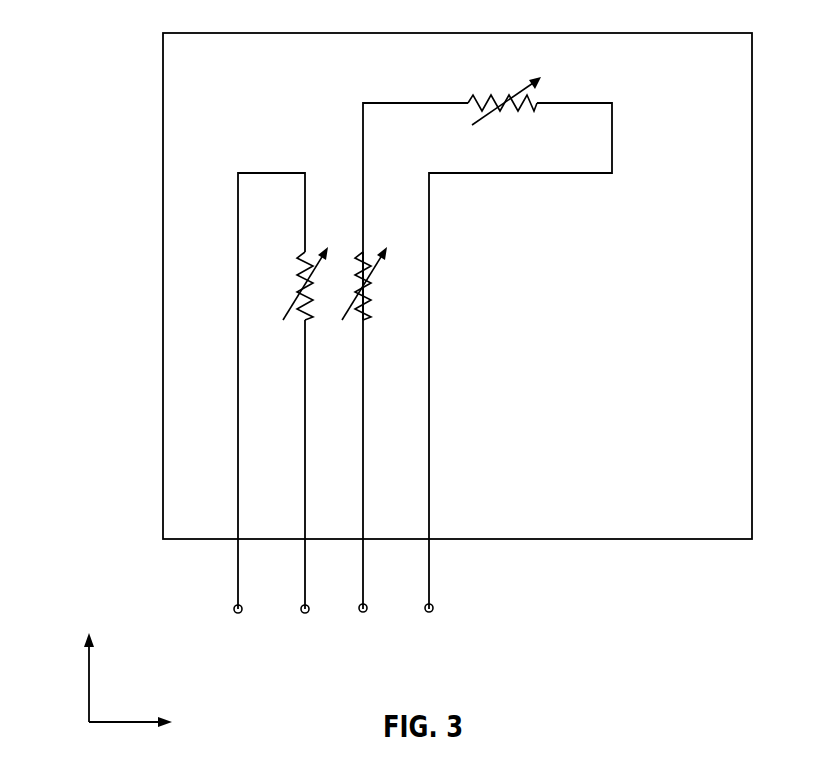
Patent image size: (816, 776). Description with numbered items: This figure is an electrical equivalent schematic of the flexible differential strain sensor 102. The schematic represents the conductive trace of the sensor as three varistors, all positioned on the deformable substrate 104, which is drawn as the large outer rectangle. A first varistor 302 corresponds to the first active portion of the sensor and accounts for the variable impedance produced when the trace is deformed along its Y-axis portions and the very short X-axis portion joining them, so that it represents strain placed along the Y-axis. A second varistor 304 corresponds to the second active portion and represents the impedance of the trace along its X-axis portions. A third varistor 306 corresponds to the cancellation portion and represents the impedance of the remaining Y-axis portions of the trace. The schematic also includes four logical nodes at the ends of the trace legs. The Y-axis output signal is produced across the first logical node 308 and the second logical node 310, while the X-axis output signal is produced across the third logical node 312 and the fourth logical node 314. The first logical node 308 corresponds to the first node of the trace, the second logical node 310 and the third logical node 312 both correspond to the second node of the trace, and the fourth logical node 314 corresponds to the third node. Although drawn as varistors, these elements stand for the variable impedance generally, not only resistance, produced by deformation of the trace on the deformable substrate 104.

The flexible differential strain sensor 102 is at (390, 352).
The deformable substrate 104 is at (163, 182).
The first varistor 302 is at (298, 310).
The second varistor 304 is at (537, 105).
The third varistor 306 is at (367, 320).
The first logical node 308 is at (234, 609).
The second logical node 310 is at (301, 608).
The third logical node 312 is at (367, 612).
The fourth logical node 314 is at (433, 610).